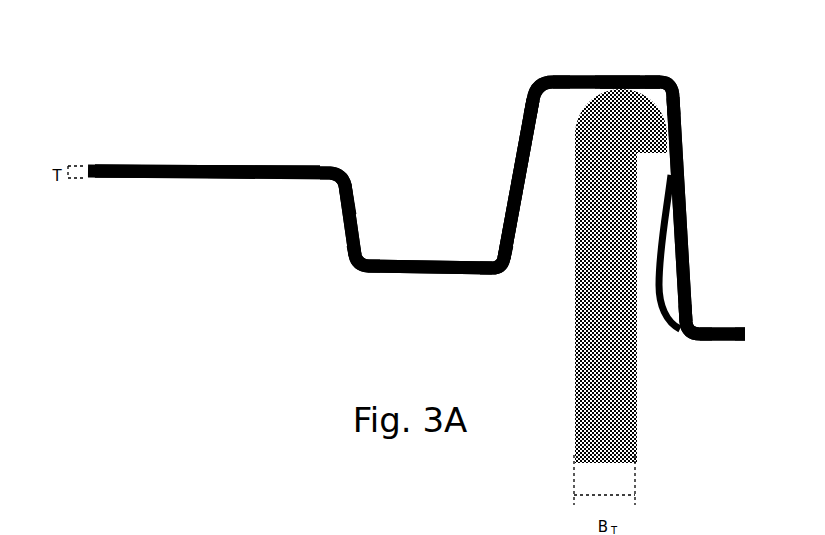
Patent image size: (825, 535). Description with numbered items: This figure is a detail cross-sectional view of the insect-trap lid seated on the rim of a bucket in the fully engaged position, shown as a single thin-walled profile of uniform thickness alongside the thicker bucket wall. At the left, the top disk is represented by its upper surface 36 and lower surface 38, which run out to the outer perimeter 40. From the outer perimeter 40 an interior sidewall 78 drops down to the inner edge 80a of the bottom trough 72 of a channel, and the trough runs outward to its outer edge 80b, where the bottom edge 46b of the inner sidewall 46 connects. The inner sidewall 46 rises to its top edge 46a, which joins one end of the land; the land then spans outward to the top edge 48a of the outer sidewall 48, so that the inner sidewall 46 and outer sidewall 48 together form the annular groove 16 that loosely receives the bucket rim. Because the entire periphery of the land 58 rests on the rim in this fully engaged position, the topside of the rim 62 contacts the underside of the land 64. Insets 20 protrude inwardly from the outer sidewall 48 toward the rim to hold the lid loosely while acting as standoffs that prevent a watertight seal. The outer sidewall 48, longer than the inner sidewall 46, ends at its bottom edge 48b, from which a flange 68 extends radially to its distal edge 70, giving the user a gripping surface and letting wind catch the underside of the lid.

The annular groove 16 is at (550, 143).
The insets 20 is at (666, 278).
The upper surface 36 is at (188, 165).
The lower surface 38 is at (240, 180).
The outer perimeter 40 is at (338, 166).
The inner sidewall 46 is at (512, 177).
The top edge of inner sidewall 46a is at (536, 80).
The bottom edge of inner sidewall 46b is at (493, 261).
The outer sidewall 48 is at (690, 207).
The top edge of outer sidewall 48a is at (678, 82).
The bottom edge of outer sidewall 48b is at (685, 338).
The entire periphery of the land 58 is at (623, 80).
The topside of the rim 62 is at (613, 88).
The underside of the land 64 is at (630, 88).
The flange 68 is at (717, 328).
The distal edge 70 is at (744, 341).
The bottom trough 72 is at (437, 274).
The interior sidewall 78 is at (343, 217).
The inner edge of the trough 80a is at (355, 270).
The outer edge of the trough 80b is at (501, 275).